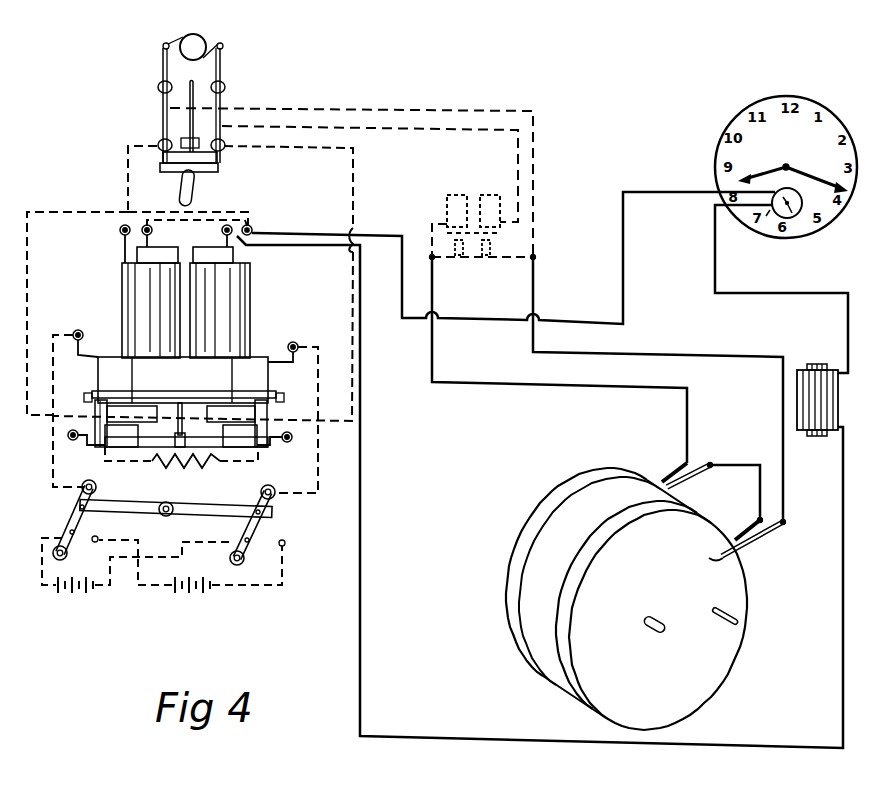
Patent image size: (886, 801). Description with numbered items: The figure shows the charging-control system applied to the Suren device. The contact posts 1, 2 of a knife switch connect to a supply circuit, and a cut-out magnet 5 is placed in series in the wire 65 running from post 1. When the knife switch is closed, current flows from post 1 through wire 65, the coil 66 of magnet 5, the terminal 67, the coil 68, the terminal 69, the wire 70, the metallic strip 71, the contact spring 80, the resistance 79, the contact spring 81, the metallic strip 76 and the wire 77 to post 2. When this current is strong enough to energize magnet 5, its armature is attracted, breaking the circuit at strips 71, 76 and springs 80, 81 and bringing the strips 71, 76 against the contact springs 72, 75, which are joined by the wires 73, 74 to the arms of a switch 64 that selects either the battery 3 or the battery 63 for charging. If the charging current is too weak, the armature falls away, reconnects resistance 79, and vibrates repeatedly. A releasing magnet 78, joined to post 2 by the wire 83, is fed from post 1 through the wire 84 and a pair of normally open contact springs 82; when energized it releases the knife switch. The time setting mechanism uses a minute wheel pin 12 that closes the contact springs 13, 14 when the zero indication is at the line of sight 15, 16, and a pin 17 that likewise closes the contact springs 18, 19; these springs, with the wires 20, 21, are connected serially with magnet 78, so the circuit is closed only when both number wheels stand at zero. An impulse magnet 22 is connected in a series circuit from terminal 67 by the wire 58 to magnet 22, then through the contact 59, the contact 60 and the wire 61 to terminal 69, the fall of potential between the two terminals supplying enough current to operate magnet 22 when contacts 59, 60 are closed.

The contact post 1 is at (159, 116).
The contact post 2 is at (224, 116).
The battery 3 is at (138, 577).
The cut-out magnet 5 is at (181, 310).
The pin 12 is at (735, 617).
The contact spring 13 is at (746, 526).
The contact spring 14 is at (747, 540).
The line of sight 15 is at (566, 571).
The line of sight 16 is at (503, 530).
The pin 17 is at (652, 491).
The contact spring 18 is at (670, 467).
The contact spring 19 is at (713, 492).
The wire 20 is at (658, 389).
The wire 21 is at (559, 360).
The impulse magnet 22 is at (838, 402).
The wire 58 is at (542, 476).
The contact 59 is at (766, 216).
The contact 60 is at (779, 192).
The wire 61 is at (513, 250).
The battery 63 is at (211, 582).
The switch 64 is at (164, 522).
The wire 65 is at (132, 179).
The coil of magnet 66 is at (136, 296).
The terminal 67 is at (222, 231).
The coil of magnet 68 is at (232, 296).
The terminal 69 is at (251, 228).
The wire 70 is at (137, 306).
The metallic strip 71 is at (157, 416).
The contact spring 72 is at (183, 380).
The wire 73 is at (68, 411).
The wire 74 is at (296, 420).
The contact spring 75 is at (220, 380).
The metallic strip 76 is at (220, 418).
The wire 77 is at (203, 283).
The releasing magnet 78 is at (473, 206).
The resistance 79 is at (181, 468).
The contact spring 80 is at (92, 408).
The contact spring 81 is at (267, 416).
The contact springs 82 is at (482, 249).
The wire 83 is at (370, 174).
The wire 84 is at (351, 176).